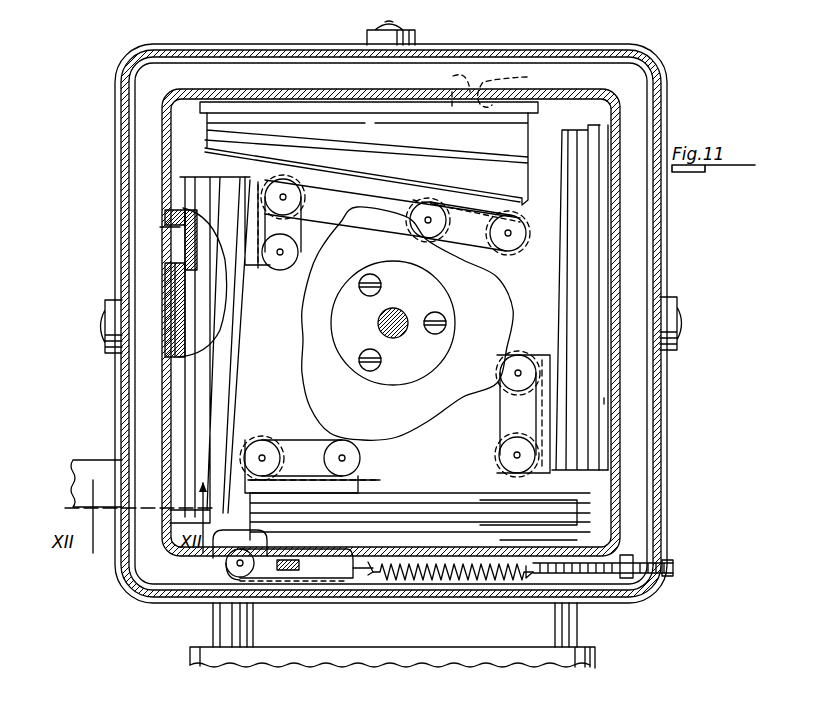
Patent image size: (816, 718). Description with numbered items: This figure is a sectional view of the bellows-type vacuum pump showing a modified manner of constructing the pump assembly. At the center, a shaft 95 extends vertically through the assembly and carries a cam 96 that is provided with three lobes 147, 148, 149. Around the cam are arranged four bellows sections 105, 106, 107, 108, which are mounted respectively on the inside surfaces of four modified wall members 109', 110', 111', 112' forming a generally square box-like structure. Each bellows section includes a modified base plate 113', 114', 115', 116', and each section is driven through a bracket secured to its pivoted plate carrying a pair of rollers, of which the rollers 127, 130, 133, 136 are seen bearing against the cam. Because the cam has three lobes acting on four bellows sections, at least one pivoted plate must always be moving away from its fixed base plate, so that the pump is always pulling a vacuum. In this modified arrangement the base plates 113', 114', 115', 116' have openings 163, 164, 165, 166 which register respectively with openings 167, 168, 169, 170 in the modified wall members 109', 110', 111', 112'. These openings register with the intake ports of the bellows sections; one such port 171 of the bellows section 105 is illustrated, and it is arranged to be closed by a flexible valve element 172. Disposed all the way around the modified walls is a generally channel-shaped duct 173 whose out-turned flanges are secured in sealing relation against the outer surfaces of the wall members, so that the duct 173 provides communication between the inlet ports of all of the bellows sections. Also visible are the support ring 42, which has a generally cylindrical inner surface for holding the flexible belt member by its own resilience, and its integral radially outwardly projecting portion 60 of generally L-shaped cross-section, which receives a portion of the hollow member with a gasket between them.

The support ring 42 is at (557, 622).
The radially outwardly projecting portion 60 is at (598, 658).
The shaft 95 is at (378, 323).
The cam 96 is at (410, 396).
The bellows section 105 is at (183, 443).
The bellows section 106 is at (405, 87).
The bellows section 107 is at (600, 283).
The bellows section 108 is at (500, 527).
The modified wall member 109' is at (121, 394).
The modified wall member 110' is at (391, 282).
The modified wall member 111' is at (663, 192).
The modified wall member 112' is at (378, 540).
The modified base plate 113' is at (127, 310).
The modified base plate 114' is at (369, 63).
The modified base plate 115' is at (633, 297).
The modified base plate 116' is at (536, 508).
The roller 127 is at (285, 277).
The roller 130 is at (423, 242).
The roller 133 is at (497, 374).
The roller 136 is at (335, 440).
The lobe 147 is at (357, 222).
The lobe 148 is at (505, 329).
The lobe 149 is at (365, 418).
The opening 163 is at (180, 267).
The opening 164 is at (520, 85).
The opening 165 is at (600, 421).
The opening 166 is at (326, 540).
The opening 167 is at (160, 226).
The opening 168 is at (455, 74).
The opening 169 is at (606, 396).
The opening 170 is at (313, 552).
The port 171 is at (190, 250).
The flexible valve element 172 is at (212, 222).
The channel-shaped duct 173 is at (160, 560).